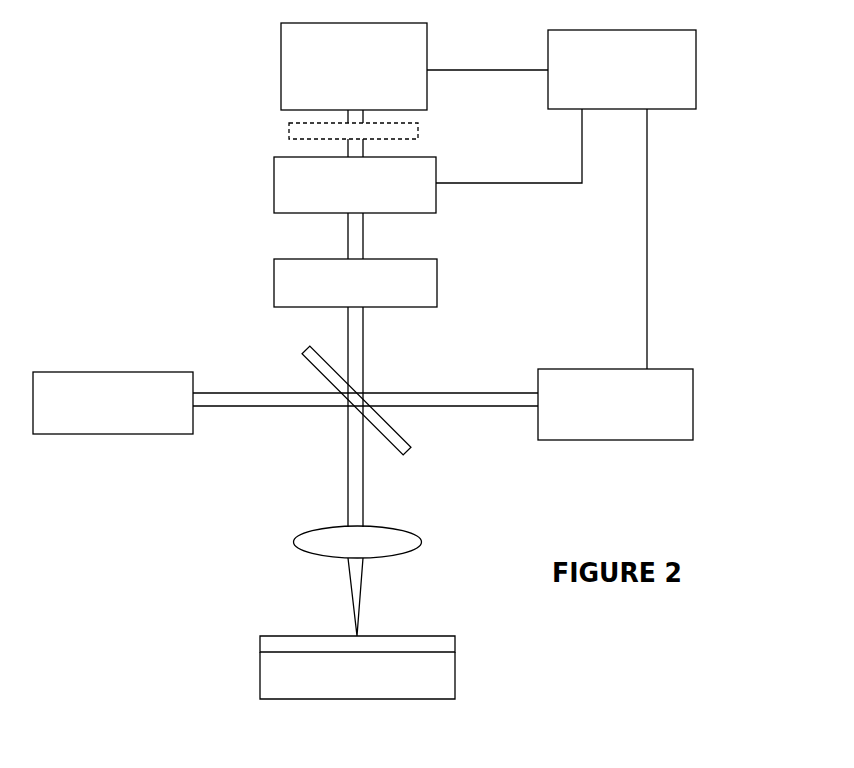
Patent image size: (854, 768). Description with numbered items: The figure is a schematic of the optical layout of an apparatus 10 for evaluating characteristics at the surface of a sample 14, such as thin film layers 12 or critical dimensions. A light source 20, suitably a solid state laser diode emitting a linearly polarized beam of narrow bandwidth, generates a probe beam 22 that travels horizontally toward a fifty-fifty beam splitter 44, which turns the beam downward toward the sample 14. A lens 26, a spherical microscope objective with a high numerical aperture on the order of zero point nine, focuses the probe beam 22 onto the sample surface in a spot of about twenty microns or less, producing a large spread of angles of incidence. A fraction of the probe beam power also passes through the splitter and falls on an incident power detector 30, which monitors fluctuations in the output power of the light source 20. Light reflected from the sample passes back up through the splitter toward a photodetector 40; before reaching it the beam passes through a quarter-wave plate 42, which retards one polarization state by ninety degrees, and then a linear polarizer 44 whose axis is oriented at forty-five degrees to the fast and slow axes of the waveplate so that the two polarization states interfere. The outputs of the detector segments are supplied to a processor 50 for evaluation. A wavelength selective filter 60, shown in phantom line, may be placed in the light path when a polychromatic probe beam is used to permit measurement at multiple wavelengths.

The apparatus 10 is at (123, 238).
The thin film layers 12 is at (260, 641).
The sample 14 is at (260, 683).
The light source 20 is at (110, 434).
The probe beam 22 is at (258, 408).
The lens 26 is at (292, 540).
The incident power detector 30 is at (697, 399).
The photodetector 40 is at (281, 66).
The quarter-wave plate 42 is at (274, 279).
The beam splitter / linear polarizer 44 is at (274, 184).
The processor 50 is at (700, 62).
The wavelength selective filter 60 is at (289, 130).